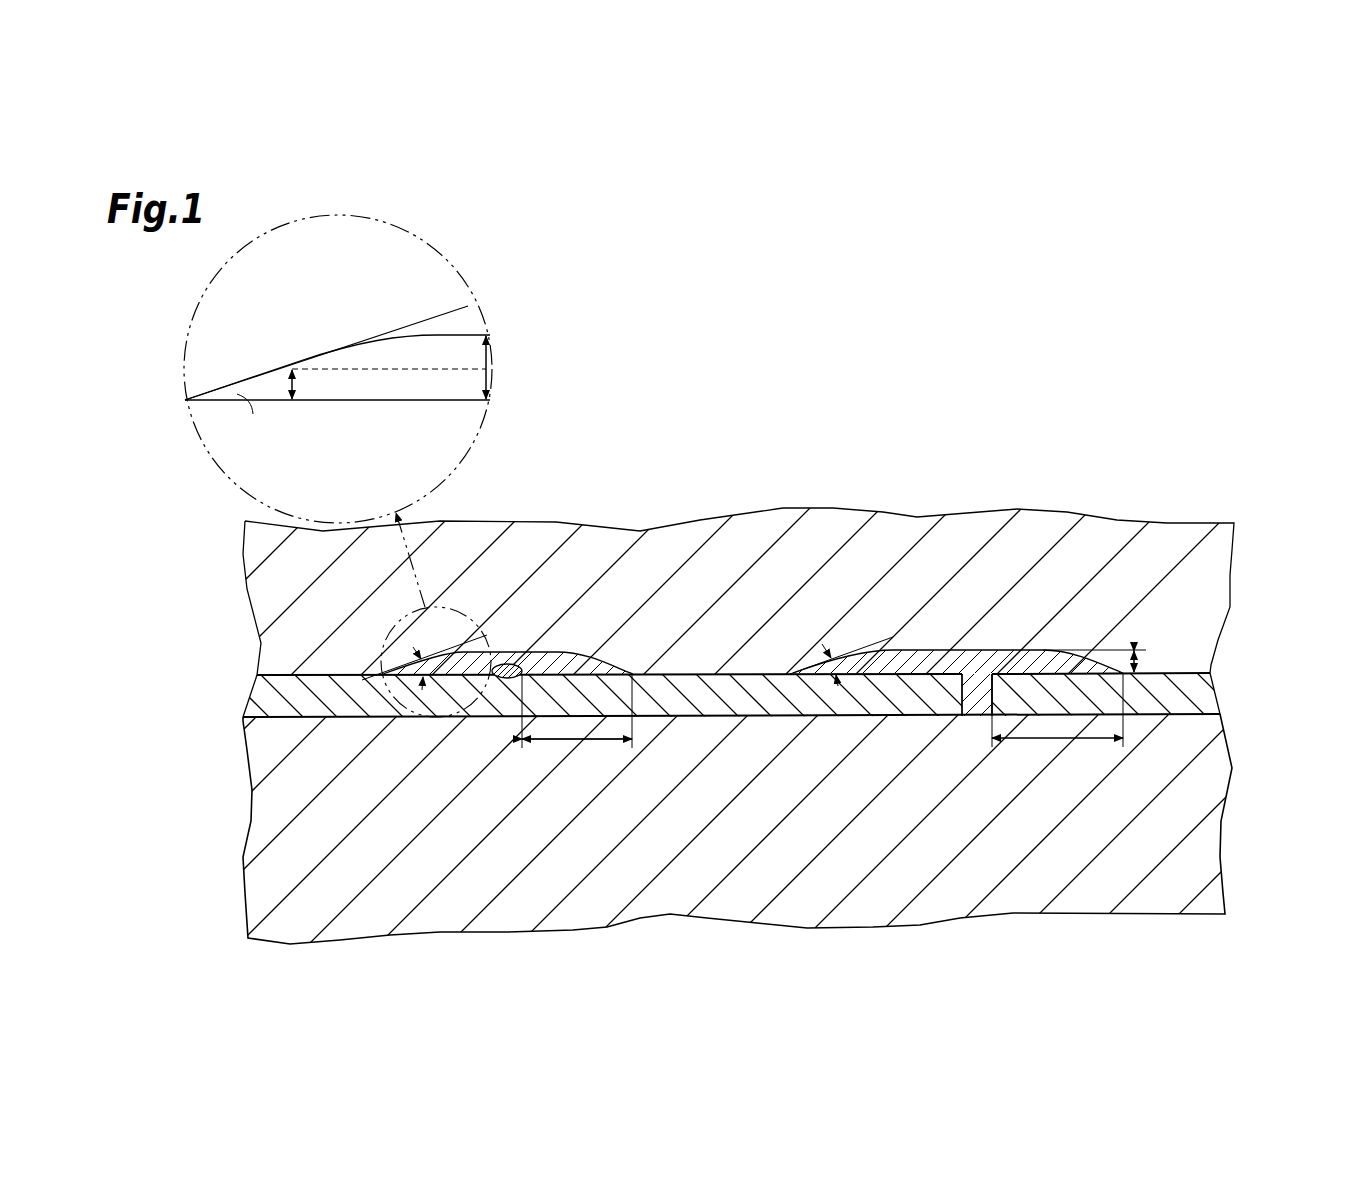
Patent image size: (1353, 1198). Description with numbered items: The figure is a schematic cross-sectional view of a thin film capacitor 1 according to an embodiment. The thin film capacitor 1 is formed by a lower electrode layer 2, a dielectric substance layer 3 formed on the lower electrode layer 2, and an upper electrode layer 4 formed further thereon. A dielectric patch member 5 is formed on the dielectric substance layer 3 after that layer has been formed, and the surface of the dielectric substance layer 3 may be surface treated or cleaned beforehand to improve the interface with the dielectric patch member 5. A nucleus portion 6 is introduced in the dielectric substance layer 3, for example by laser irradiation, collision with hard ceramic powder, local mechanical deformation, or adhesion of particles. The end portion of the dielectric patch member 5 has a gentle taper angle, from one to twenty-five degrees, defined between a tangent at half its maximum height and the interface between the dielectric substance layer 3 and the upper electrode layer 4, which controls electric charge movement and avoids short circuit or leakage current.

The thin film capacitor 1 is at (651, 459).
The lower electrode layer 2 is at (1227, 812).
The dielectric substance layer 3 is at (260, 696).
The upper electrode layer 4 is at (1230, 607).
The dielectric patch member 5 is at (540, 652).
The nucleus portion 6 is at (505, 664).